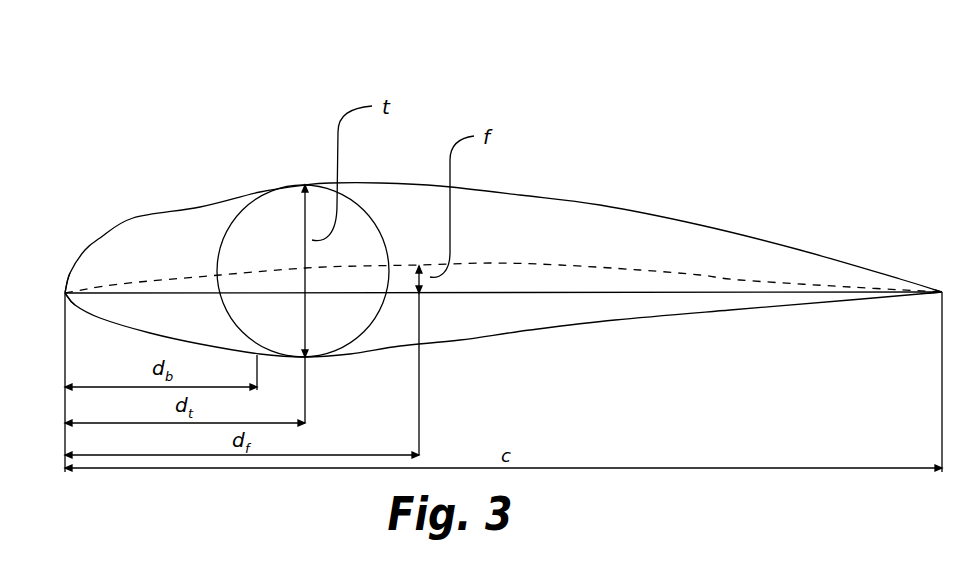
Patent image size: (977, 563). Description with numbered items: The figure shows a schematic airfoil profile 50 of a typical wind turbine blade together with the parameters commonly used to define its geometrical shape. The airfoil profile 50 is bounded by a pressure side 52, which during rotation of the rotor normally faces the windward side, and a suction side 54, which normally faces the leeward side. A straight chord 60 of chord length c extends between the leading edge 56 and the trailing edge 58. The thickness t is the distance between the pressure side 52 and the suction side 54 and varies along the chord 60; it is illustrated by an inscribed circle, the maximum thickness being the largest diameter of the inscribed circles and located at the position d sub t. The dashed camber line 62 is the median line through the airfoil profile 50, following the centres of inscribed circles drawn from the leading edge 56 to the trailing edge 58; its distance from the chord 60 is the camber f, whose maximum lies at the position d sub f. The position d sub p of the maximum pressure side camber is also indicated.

The airfoil profile 50 is at (503, 210).
The pressure side 52 is at (676, 321).
The suction side 54 is at (608, 200).
The leading edge 56 is at (65, 293).
The trailing edge 58 is at (942, 292).
The chord 60 is at (717, 292).
The camber line 62 is at (490, 264).